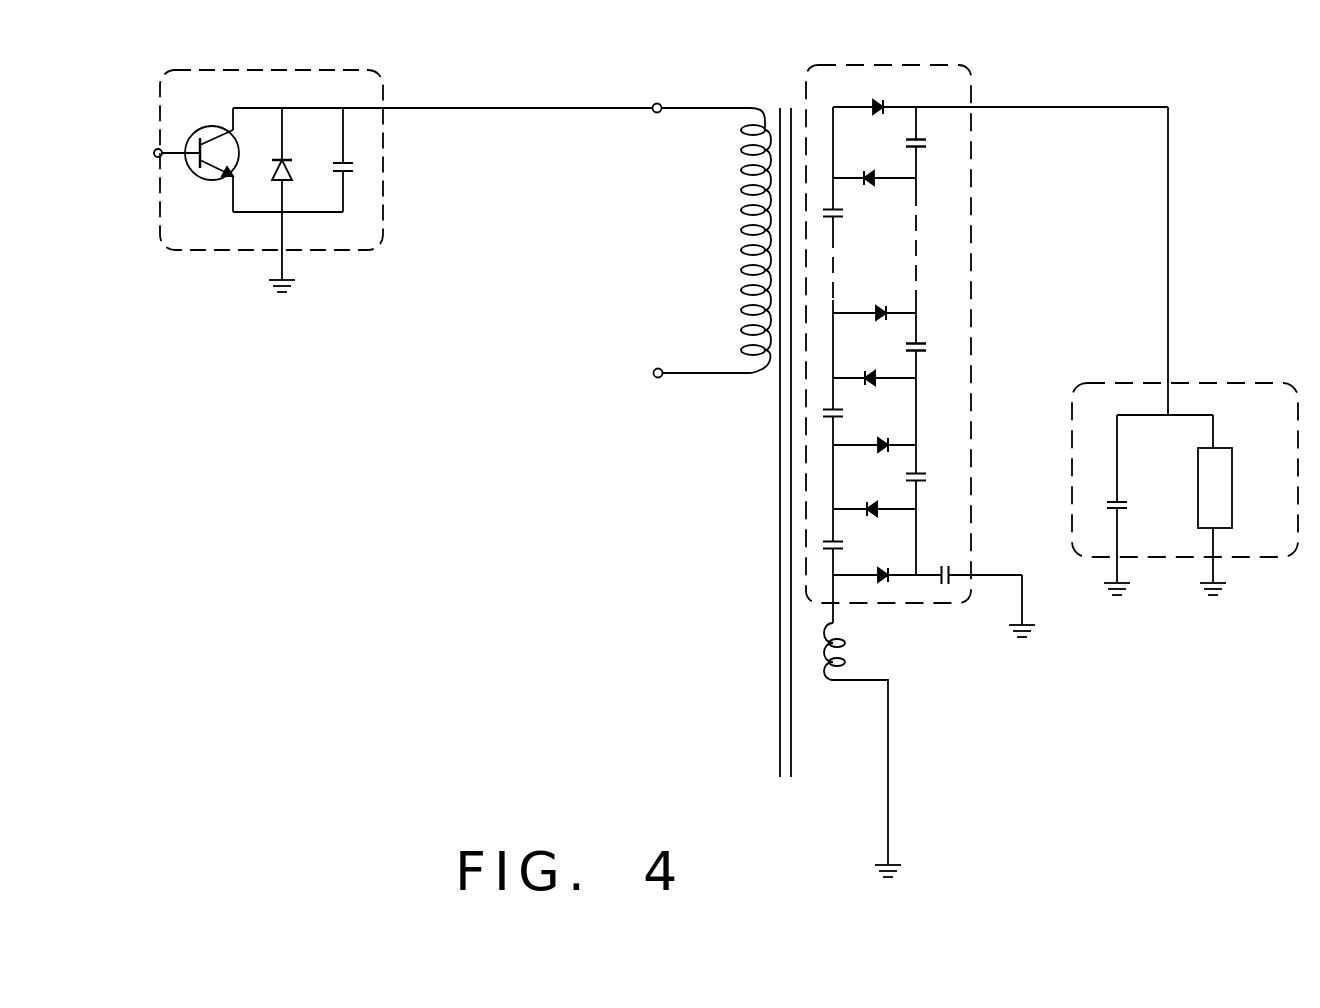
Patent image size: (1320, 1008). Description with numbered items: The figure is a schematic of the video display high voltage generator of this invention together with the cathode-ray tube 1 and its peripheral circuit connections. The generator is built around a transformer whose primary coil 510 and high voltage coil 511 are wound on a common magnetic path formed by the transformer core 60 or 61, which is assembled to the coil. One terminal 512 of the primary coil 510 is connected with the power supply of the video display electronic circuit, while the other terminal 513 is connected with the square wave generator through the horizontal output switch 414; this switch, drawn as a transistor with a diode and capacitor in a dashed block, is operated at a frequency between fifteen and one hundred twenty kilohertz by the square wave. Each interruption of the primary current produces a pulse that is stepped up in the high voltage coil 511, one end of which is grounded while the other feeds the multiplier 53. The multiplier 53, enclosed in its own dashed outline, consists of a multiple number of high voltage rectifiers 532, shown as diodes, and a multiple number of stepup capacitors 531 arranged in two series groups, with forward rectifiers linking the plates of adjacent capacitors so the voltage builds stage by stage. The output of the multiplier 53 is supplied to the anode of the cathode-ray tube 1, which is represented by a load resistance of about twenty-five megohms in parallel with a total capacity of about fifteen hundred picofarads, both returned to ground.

The horizontal output switch 414 is at (345, 68).
The terminal of the primary coil 513 is at (655, 104).
The primary coil 510 is at (754, 102).
The terminal of the primary coil 512 is at (654, 370).
The high voltage coil 511 is at (823, 643).
The transformer core 60 is at (688, 448).
The core 61 is at (780, 771).
The multiplier 53 is at (932, 606).
The stepup capacitors 531 is at (935, 342).
The high voltage rectifiers 532 is at (862, 381).
The cathode-ray tube 1 is at (1256, 386).